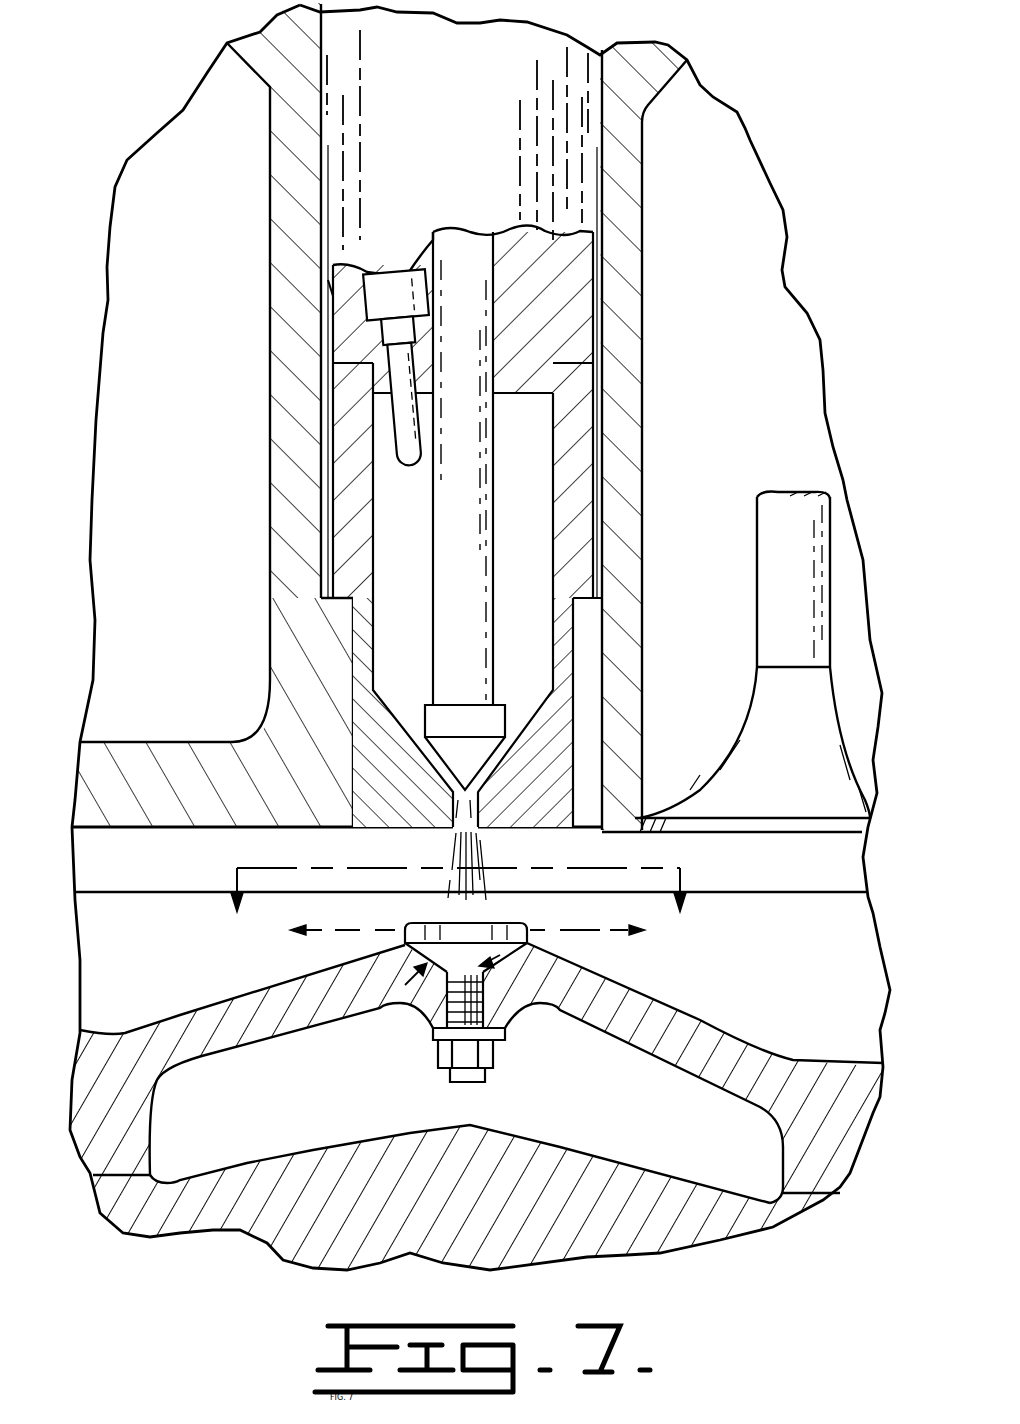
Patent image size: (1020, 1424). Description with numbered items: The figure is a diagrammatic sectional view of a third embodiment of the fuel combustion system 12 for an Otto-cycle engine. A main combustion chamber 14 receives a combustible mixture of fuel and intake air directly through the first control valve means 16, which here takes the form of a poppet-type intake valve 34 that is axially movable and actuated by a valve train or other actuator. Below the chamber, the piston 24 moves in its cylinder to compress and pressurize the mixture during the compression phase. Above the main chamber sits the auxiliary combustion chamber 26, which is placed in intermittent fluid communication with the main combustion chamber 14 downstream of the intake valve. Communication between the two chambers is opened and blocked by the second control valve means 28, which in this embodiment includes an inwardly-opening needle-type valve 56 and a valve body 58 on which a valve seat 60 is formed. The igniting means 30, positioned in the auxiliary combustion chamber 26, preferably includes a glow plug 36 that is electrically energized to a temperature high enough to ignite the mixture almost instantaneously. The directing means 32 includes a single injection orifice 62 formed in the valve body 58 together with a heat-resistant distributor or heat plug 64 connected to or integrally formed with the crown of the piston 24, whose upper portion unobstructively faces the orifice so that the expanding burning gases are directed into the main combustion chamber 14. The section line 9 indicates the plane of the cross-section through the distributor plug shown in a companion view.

The fuel combustion system 12 is at (143, 118).
The main combustion chamber 14 is at (199, 965).
The first control valve means 16 is at (850, 585).
The piston 24 is at (708, 1233).
The auxiliary combustion chamber 26 is at (420, 555).
The second control valve means 28 is at (530, 291).
The igniting means 30 is at (345, 297).
The directing means 32 is at (388, 1012).
The intake valve 34 is at (805, 641).
The glow plug 36 is at (400, 410).
The needle-type valve 56 is at (470, 342).
The valve body 58 is at (368, 752).
The valve seat 60 is at (490, 763).
The injection orifice 62 is at (455, 820).
The distributor plug 64 is at (525, 1007).
The section line 9- 9 is at (460, 874).